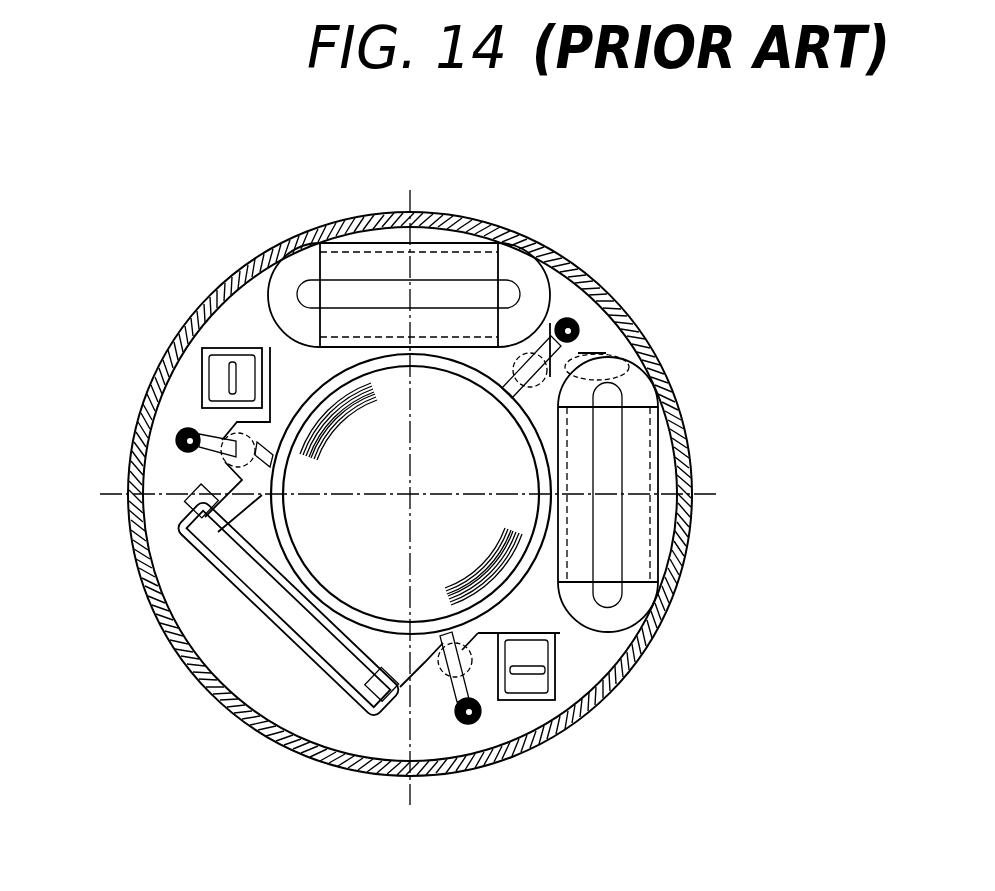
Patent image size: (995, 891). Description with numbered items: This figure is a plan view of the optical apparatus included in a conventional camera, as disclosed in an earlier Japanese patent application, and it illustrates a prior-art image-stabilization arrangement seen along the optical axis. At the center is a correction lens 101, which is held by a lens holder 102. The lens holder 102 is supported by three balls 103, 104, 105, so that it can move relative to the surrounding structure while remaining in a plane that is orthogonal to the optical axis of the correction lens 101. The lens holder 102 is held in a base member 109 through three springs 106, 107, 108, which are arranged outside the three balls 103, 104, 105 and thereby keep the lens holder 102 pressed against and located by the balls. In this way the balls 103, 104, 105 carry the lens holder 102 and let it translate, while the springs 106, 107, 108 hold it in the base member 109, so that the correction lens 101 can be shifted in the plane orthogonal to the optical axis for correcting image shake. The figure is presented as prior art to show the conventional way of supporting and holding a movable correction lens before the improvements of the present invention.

The correction lens 101 is at (395, 385).
The lens holder 102 is at (290, 355).
The ball 103 is at (630, 358).
The ball 104 is at (445, 690).
The ball 105 is at (220, 462).
The spring 106 is at (575, 327).
The spring 107 is at (475, 722).
The spring 108 is at (176, 443).
The base member 109 is at (578, 300).